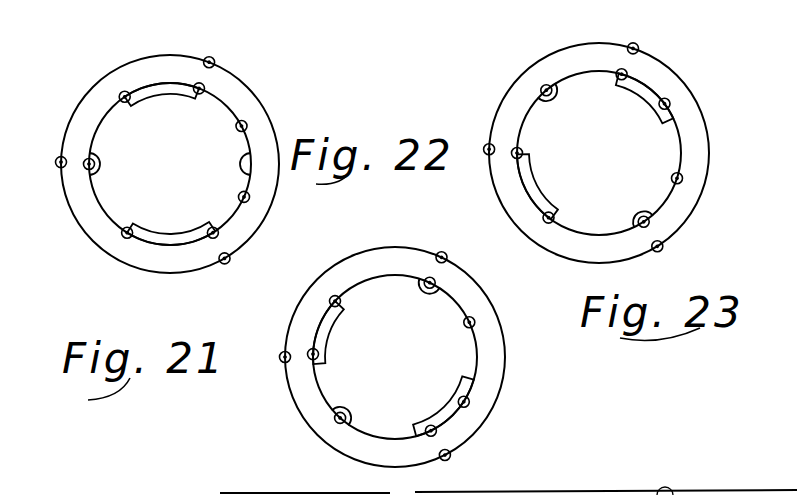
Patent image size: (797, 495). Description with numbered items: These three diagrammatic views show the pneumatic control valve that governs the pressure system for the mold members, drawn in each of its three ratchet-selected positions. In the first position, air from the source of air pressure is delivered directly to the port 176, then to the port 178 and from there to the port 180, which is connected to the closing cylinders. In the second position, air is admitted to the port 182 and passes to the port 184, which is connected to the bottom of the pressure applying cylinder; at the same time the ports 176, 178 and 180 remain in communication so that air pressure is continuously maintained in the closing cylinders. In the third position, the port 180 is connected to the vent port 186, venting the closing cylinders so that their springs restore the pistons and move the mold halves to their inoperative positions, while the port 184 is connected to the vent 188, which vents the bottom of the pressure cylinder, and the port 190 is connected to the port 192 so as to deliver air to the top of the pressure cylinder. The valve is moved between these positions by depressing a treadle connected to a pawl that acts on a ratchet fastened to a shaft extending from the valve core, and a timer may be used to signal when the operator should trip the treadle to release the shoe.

In FIG. 22, the port 176 is at (256, 270).
In FIG. 23, the port 176 is at (662, 249).
In FIG. 21, the port 176 is at (450, 453).
In FIG. 22, the port 178 is at (249, 197).
In FIG. 23, the port 178 is at (682, 177).
In FIG. 21, the port 178 is at (469, 401).
In FIG. 22, the port 180 is at (211, 238).
In FIG. 23, the port 180 is at (649, 221).
In FIG. 21, the port 180 is at (428, 435).
In FIG. 22, the port 182 is at (230, 38).
In FIG. 23, the port 182 is at (658, 18).
In FIG. 21, the port 182 is at (463, 266).
In FIG. 22, the port 184 is at (203, 85).
In FIG. 23, the port 184 is at (625, 72).
In FIG. 21, the port 184 is at (426, 281).
In FIG. 22, the vent port 186 is at (124, 237).
In FIG. 23, the vent port 186 is at (546, 222).
In FIG. 21, the vent port 186 is at (335, 419).
In FIG. 22, the vent 188 is at (122, 93).
In FIG. 23, the vent 188 is at (545, 86).
In FIG. 21, the vent 188 is at (335, 296).
In FIG. 22, the port 190 is at (86, 169).
In FIG. 23, the port 190 is at (513, 152).
In FIG. 21, the port 190 is at (312, 349).
In FIG. 22, the port 192 is at (57, 164).
In FIG. 23, the port 192 is at (484, 151).
In FIG. 21, the port 192 is at (280, 356).